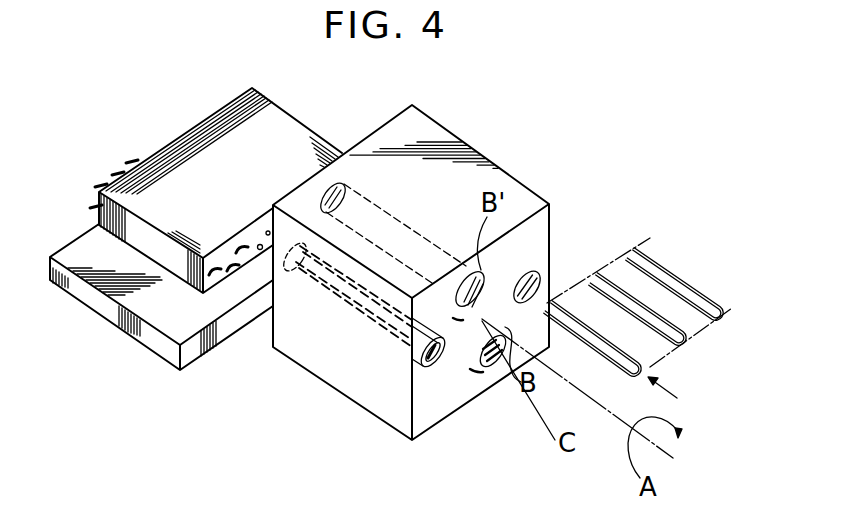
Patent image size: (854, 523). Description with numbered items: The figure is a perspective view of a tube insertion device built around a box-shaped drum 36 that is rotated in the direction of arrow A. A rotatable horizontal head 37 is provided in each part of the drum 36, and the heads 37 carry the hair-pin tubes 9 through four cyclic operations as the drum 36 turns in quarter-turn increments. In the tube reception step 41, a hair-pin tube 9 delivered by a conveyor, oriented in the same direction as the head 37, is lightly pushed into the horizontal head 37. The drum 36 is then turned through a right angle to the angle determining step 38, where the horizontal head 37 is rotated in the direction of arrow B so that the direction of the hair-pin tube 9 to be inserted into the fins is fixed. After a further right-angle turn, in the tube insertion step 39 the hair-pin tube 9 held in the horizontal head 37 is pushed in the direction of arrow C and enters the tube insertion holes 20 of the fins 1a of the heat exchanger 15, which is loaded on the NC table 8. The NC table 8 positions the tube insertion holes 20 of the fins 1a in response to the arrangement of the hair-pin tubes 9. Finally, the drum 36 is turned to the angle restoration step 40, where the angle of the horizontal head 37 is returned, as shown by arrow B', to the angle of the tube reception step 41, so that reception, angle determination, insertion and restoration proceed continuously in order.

The fins 1a is at (228, 176).
The NC table 8 is at (157, 357).
The hair-pin tube 9 is at (128, 160).
The heat exchanger 15 is at (298, 119).
The tube insertion holes 20 is at (260, 250).
The drum 36 is at (411, 260).
The horizontal head 37 is at (509, 320).
The angle determining step 38 is at (485, 384).
The tube insertion step 39 is at (462, 96).
The angle restoration step 40 is at (481, 272).
The tube reception step 41 is at (547, 284).